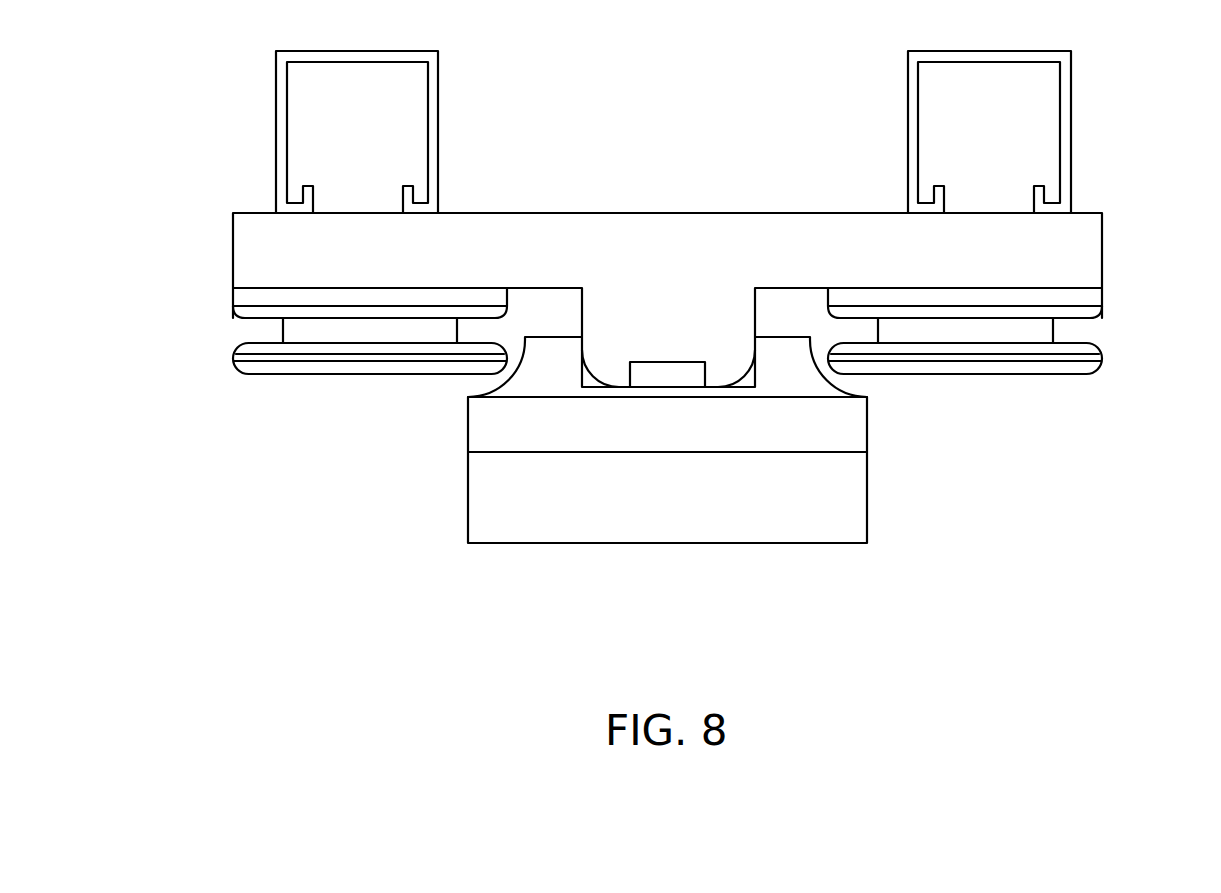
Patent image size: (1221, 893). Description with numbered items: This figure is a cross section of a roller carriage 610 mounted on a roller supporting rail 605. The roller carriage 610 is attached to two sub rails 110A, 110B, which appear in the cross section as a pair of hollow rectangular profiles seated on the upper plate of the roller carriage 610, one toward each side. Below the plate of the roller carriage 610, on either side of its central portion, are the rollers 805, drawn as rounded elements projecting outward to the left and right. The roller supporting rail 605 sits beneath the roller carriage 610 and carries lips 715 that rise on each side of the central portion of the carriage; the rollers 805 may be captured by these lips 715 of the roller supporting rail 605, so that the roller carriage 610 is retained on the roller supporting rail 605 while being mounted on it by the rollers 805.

The sub rail 110A is at (303, 141).
The sub rail 110B is at (1067, 142).
The roller carriage 610 is at (671, 246).
The lips 715 is at (525, 337).
The rollers 805 is at (232, 360).
The roller supporting rail 605 is at (565, 536).